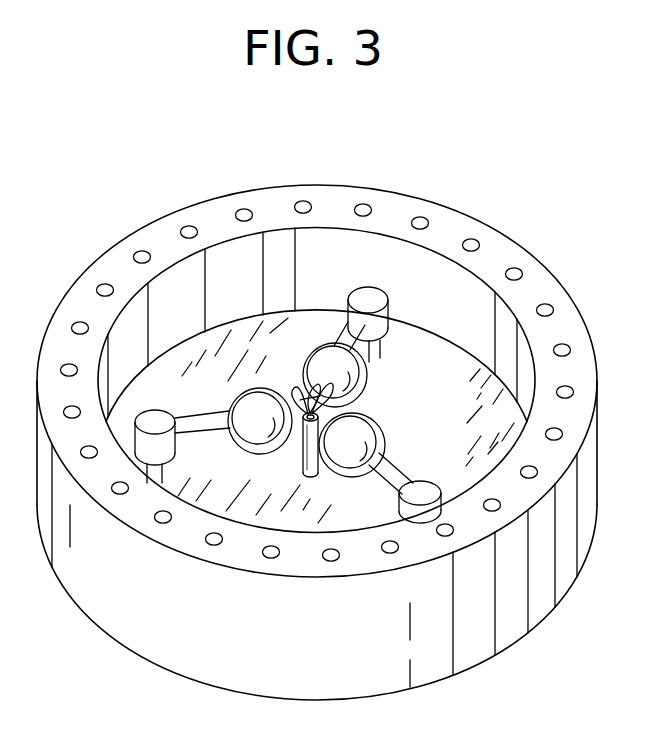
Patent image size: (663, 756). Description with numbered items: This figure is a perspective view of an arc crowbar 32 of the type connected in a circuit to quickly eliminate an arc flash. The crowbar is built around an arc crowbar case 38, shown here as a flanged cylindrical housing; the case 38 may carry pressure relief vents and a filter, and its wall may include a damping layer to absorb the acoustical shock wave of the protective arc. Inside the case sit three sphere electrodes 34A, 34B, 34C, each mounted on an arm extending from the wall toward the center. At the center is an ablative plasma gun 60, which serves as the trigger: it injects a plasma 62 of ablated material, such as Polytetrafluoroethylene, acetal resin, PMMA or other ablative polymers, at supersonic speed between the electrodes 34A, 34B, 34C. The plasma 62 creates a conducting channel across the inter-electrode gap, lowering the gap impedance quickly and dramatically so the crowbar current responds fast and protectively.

The arc crowbar 32 is at (188, 173).
The arc crowbar case 38 is at (240, 192).
The sphere electrode 34A is at (367, 424).
The sphere electrode 34B is at (370, 379).
The sphere electrode 34C is at (233, 407).
The ablative plasma gun 60 is at (294, 462).
The plasma 62 is at (297, 388).